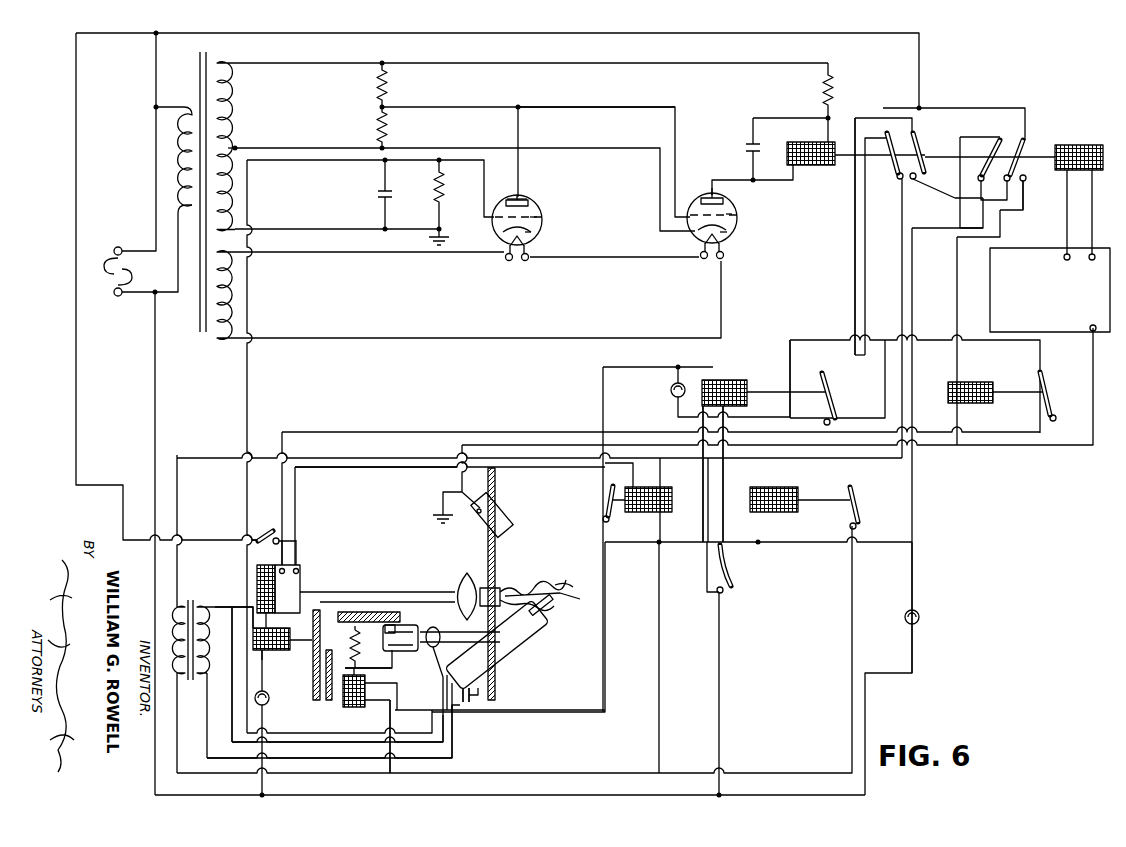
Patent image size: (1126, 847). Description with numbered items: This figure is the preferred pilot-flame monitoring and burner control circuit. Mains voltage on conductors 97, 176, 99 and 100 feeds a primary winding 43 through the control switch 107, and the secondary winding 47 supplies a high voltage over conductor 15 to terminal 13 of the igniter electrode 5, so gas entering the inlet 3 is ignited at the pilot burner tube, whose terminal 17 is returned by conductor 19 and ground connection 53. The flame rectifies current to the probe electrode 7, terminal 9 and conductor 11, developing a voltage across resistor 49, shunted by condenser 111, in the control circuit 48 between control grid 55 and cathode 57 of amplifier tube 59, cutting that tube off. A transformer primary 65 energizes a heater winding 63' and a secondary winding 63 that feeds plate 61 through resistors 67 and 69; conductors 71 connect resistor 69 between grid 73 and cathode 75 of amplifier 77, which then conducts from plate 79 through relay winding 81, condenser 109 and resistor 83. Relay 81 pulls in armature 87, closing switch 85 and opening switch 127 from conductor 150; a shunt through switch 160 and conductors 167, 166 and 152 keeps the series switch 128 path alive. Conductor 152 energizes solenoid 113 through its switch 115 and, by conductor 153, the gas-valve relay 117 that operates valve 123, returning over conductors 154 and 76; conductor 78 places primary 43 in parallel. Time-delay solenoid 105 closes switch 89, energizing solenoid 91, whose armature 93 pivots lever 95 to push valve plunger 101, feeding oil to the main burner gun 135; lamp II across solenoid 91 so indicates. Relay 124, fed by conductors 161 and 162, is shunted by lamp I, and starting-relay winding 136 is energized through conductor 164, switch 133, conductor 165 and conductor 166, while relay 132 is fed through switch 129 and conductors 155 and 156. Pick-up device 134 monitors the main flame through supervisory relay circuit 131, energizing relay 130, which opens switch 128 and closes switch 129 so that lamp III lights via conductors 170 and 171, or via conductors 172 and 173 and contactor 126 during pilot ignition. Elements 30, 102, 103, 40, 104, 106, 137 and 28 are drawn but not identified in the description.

The conductor 97 is at (624, 33).
The conductor 176 is at (84, 376).
The primary winding 65 is at (172, 168).
The secondary winding 63 is at (240, 146).
The plate 61 is at (240, 146).
The heater secondary winding 63' is at (251, 295).
The resistor 67 is at (386, 82).
The resistor 69 is at (388, 127).
The conductors 71 is at (587, 148).
The by-pass condenser 111 is at (375, 196).
The resistor 49 is at (436, 198).
The indicator or control circuit 48 is at (640, 181).
The electron-discharge amplifier tube 59 is at (546, 202).
The control-grid electrode 55 is at (541, 212).
The cathode 57 is at (538, 234).
The control grid 73 is at (734, 216).
The plate 79 is at (705, 194).
The vacuum-tube amplifier 77 is at (748, 204).
The cathode 75 is at (727, 235).
The by-pass condenser 109 is at (742, 144).
The resistor 83 is at (824, 90).
The solenoid relay winding 81 is at (816, 165).
The switch 127 is at (886, 133).
The switch 85 is at (928, 164).
The armature 87 is at (874, 172).
The switch 128 is at (993, 147).
The switch 129 is at (1028, 147).
The solenoid relay 130 is at (1076, 145).
The conductor 170 is at (1023, 200).
The conductor 150 is at (938, 200).
The conductor 152 is at (912, 232).
The conductor 173 is at (850, 266).
The conductor 172 is at (860, 264).
The conductor 171 is at (908, 278).
The conductor 155 is at (956, 318).
The main-burner flame-supervisory relay circuit 131 is at (990, 312).
The conductor 165 is at (838, 320).
The solenoid relay 124 is at (752, 380).
The indicator lamp I is at (683, 386).
The switch 126 is at (834, 404).
The solenoid relay 132 is at (976, 380).
The switch 133 is at (1052, 388).
The conductor 161 is at (600, 416).
The conductor 164 is at (322, 432).
The conductor 78 is at (340, 458).
The conductor 166 is at (354, 472).
The main flame-responsive pick-up device 134 is at (502, 510).
The furnace wall 30 is at (496, 684).
The switch 160 is at (260, 532).
The conductor 167 is at (299, 544).
The burner-motor starting relay winding 136 is at (298, 586).
The relay coil 103 is at (290, 640).
The conductor 15 is at (252, 602).
The solenoid winding 91 is at (248, 610).
The primary transformer winding 43 is at (174, 640).
The secondary winding 47 is at (210, 639).
The armature 93 is at (282, 664).
The lever 95 is at (312, 686).
The valve plunger 101 is at (314, 694).
The indicator lamp II is at (265, 708).
The valve body 102 is at (360, 612).
The valve 123 is at (390, 624).
The piston 40 is at (424, 620).
The spring 104 is at (376, 668).
The plate 106 is at (376, 669).
The solenoid relay 117 is at (370, 692).
The inlet 3 is at (462, 628).
The electric terminal 9 is at (436, 642).
The main burner gun 135 is at (466, 586).
The flame rod or probe electrode 7 is at (504, 596).
The flame 137 is at (537, 596).
The burner 28 is at (500, 656).
The igniter electrode 5 is at (532, 624).
The terminal 17 is at (458, 690).
The electric terminal 13 is at (418, 702).
The ground connection 53 is at (458, 710).
The conductor 11 is at (390, 736).
The conductor 19 is at (460, 750).
The conductor 154 is at (390, 722).
The conductor 99 is at (219, 784).
The conductor 76 is at (170, 758).
The time-delay solenoid relay 113 is at (618, 514).
The switch 115 is at (604, 524).
The conductor 162 is at (710, 466).
The time-delay solenoid relay 105 is at (790, 488).
The switch 89 is at (860, 518).
The conductor 156 is at (962, 522).
The indicator lamp III is at (920, 616).
The control switch 107 is at (736, 586).
The conductor 100 is at (724, 652).
The conductor 153 is at (606, 648).